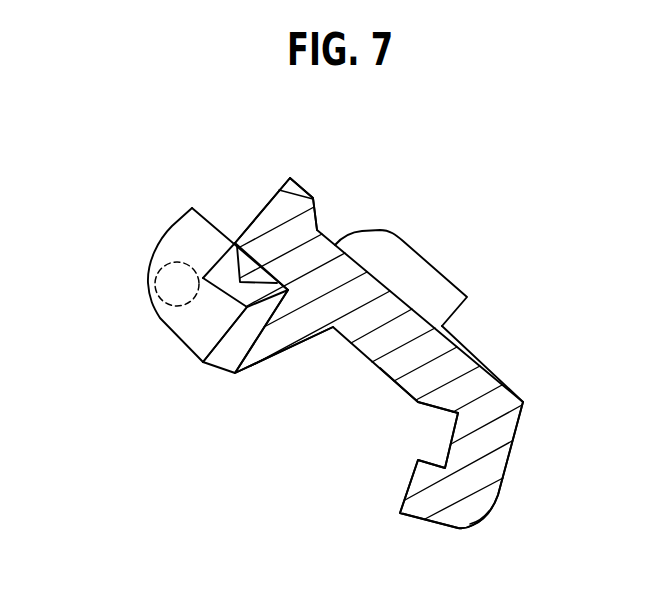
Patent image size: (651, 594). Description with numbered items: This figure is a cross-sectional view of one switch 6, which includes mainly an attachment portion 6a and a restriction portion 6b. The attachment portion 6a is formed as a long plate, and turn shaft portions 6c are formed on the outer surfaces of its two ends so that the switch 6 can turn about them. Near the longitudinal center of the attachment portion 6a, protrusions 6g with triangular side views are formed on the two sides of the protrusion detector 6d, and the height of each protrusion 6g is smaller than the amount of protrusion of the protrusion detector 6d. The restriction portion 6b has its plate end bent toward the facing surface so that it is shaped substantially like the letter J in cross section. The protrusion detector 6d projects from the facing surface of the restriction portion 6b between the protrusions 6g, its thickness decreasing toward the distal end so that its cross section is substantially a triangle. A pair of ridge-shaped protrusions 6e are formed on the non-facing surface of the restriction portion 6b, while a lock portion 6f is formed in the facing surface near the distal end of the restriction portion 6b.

The switch 6 is at (378, 160).
The attachment portion 6a is at (260, 212).
The restriction portion 6b is at (491, 369).
The turn shaft portion 6c is at (153, 284).
The protrusion detector 6d is at (248, 374).
The ridge-shaped protrusion 6e is at (437, 270).
The lock portion 6f is at (427, 442).
The protrusion 6g is at (240, 274).